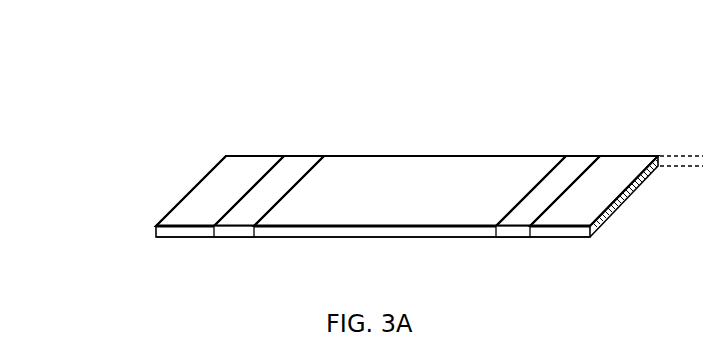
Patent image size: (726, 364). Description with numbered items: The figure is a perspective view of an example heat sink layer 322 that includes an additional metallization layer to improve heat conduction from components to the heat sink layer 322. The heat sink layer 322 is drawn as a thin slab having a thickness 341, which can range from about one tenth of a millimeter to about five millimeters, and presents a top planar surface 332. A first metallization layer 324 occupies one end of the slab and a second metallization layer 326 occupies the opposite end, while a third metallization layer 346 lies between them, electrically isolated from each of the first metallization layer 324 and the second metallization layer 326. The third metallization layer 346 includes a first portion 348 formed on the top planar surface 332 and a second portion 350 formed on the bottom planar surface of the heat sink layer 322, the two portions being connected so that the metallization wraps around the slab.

The heat sink layer 322 is at (422, 112).
The first metallization layer 324 is at (184, 196).
The second metallization layer 326 is at (598, 227).
The top planar surface 332 is at (572, 169).
The thickness 341 is at (692, 200).
The third metallization layer 346 is at (308, 173).
The first portion 348 is at (425, 199).
The second portion 350 is at (423, 238).